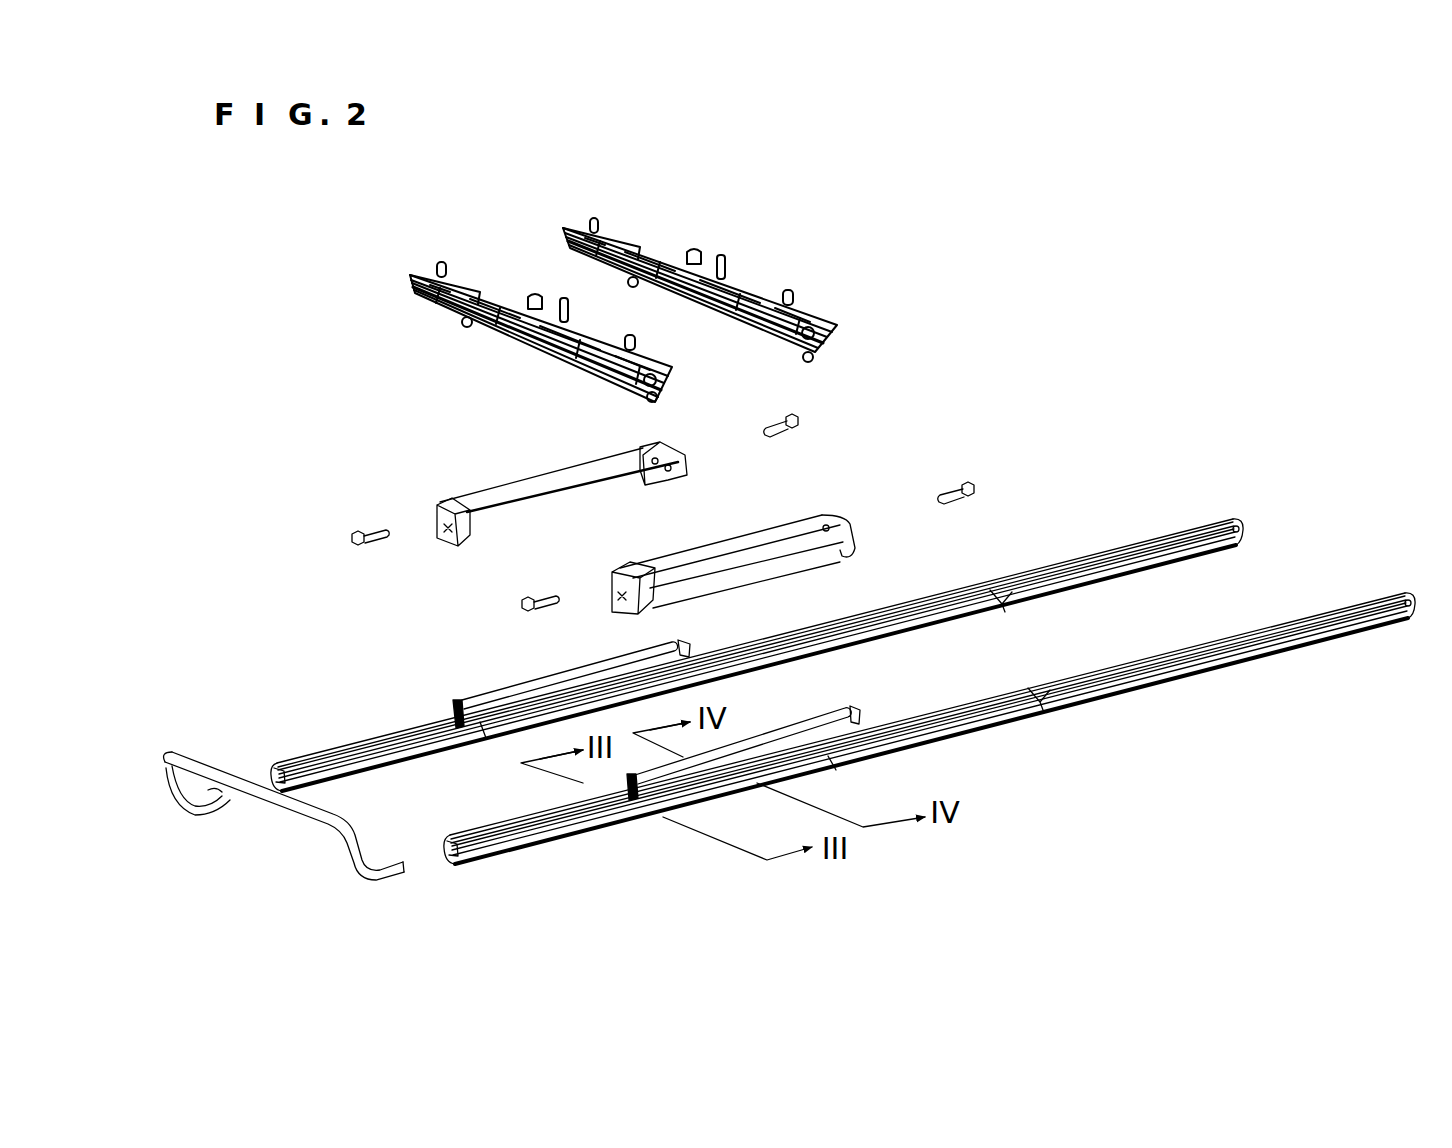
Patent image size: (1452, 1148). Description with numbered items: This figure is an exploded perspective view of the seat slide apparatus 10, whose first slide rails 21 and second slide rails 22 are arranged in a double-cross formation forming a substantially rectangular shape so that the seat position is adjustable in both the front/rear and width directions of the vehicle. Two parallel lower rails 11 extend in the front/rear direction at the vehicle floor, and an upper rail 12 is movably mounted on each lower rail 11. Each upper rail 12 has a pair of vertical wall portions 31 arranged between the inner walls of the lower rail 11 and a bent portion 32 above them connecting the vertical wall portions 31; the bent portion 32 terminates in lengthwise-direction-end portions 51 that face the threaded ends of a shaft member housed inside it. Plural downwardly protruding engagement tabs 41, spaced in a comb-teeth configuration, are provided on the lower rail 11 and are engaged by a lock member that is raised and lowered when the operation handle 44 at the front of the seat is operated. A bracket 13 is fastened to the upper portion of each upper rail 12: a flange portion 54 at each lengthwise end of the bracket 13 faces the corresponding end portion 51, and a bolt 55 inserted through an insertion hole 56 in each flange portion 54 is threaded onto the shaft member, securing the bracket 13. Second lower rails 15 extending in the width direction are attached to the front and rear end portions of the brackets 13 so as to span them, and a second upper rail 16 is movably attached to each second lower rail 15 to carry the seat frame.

The seat slide apparatus 10 is at (300, 193).
The lower rail 11 is at (1177, 530).
The upper rail 12 is at (647, 714).
The bracket 13 is at (663, 544).
The second lower rail 15 is at (540, 350).
The second upper rail 16 is at (618, 310).
The first slide rail 21 is at (843, 667).
The second slide rail 22 is at (618, 314).
The vertical wall portion 31 is at (484, 738).
The bent portion 32 is at (481, 696).
The engagement tab 41 is at (1004, 606).
The operation handle 44 is at (262, 820).
The lengthwise-direction-end portion 51 is at (686, 644).
The flange portion 54 is at (688, 468).
The bolt 55 is at (350, 540).
The insertion hole 56 is at (655, 478).